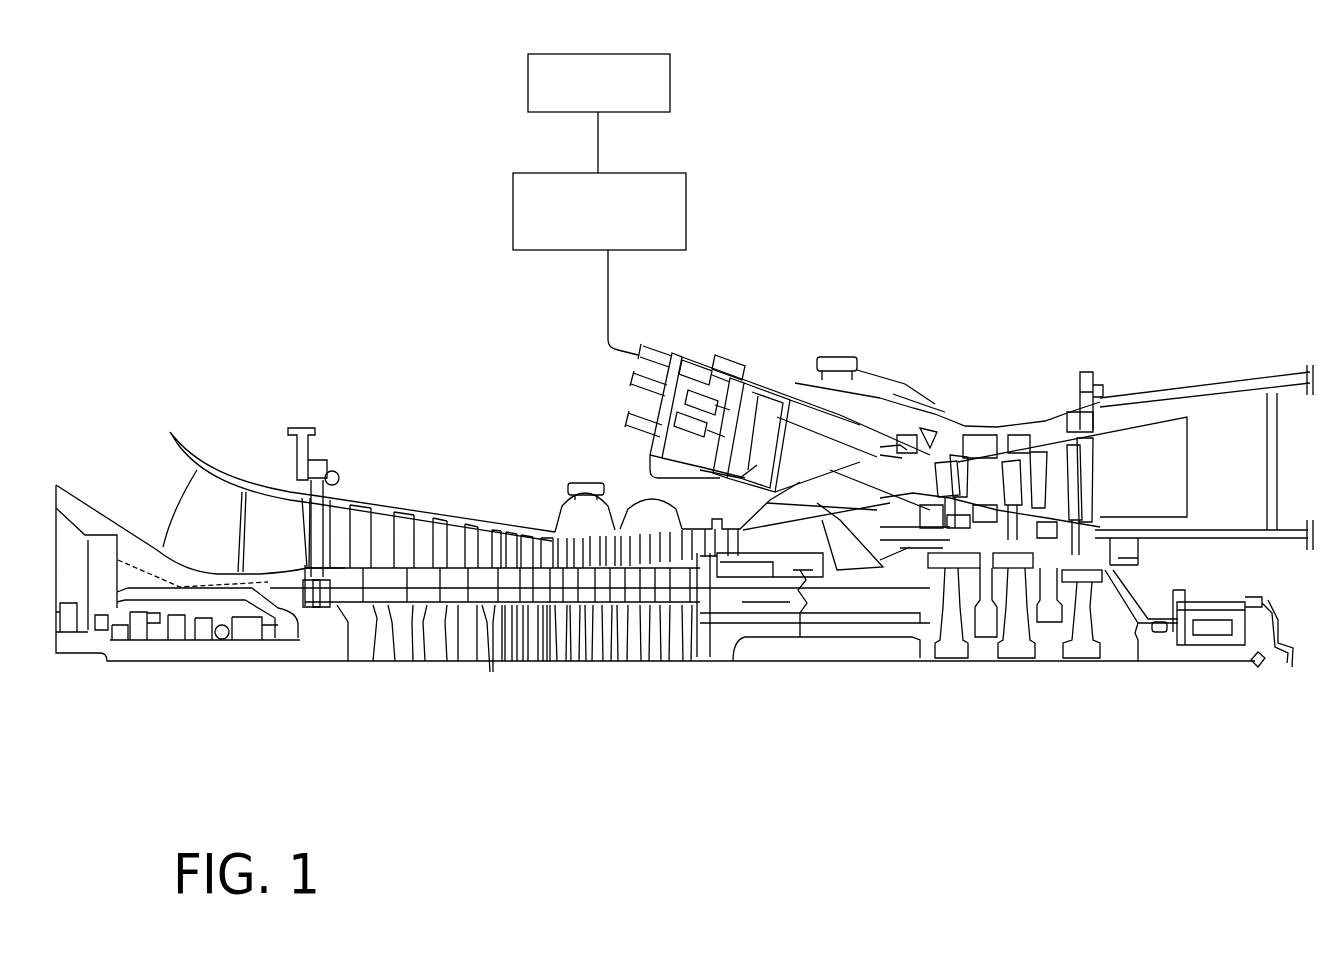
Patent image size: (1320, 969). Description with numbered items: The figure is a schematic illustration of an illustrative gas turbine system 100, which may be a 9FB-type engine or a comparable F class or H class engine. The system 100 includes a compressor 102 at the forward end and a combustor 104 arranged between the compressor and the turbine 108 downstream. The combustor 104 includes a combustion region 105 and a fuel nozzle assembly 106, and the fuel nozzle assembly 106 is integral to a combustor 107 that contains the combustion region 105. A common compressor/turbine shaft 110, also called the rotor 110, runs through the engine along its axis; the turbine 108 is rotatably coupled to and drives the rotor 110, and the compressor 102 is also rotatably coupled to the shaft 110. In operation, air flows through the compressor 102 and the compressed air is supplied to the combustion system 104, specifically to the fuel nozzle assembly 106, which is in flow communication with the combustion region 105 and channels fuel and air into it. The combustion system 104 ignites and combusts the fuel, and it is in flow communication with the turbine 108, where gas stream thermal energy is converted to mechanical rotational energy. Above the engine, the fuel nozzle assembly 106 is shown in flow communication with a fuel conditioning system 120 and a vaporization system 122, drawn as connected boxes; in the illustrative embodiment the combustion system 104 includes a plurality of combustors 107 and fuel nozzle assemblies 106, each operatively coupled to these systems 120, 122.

The gas turbine system 100 is at (206, 246).
The compressor 102 is at (437, 500).
The combustor 104 is at (800, 303).
The combustion region 105 is at (775, 372).
The fuel nozzle assembly 106 is at (684, 352).
The combustor 107 is at (727, 353).
The turbine 108 is at (1068, 410).
The common compressor/turbine shaft 110 is at (338, 600).
The fuel conditioning system 120 is at (619, 226).
The vaporization system 122 is at (619, 98).